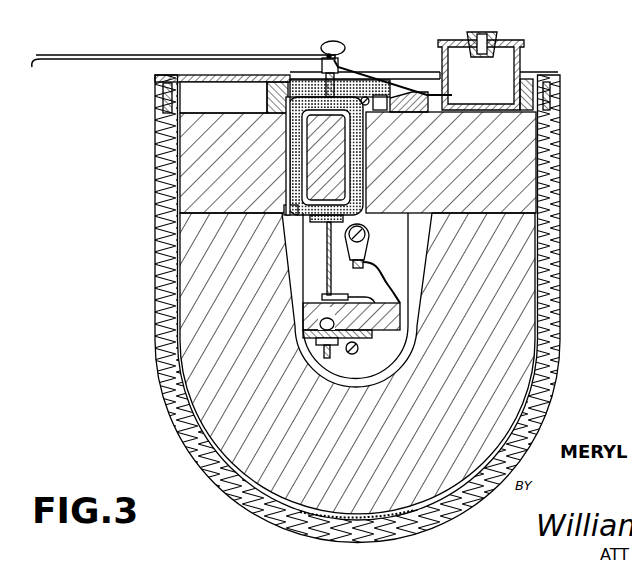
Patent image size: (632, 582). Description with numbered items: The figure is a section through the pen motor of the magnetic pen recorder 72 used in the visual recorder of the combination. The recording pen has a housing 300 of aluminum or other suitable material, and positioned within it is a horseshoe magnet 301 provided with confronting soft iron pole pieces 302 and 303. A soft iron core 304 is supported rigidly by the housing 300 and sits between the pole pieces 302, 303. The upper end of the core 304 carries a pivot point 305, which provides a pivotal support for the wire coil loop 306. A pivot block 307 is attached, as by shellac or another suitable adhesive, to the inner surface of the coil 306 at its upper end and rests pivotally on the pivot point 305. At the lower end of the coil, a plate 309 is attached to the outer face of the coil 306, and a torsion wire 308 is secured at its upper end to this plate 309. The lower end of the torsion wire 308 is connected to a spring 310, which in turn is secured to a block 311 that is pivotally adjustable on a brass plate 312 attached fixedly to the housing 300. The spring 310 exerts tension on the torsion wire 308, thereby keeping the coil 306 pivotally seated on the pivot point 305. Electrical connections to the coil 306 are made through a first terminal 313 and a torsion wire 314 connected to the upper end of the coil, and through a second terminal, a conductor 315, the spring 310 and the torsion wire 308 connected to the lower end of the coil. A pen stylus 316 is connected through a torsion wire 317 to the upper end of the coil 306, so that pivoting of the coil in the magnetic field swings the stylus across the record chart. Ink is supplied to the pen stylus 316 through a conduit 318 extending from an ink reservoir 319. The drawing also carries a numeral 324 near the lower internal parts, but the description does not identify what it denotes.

The magnetic pen recorder 72 is at (153, 275).
The housing 300 is at (548, 160).
The horseshoe magnet 301 is at (512, 245).
The pole piece 302 is at (217, 192).
The pole piece 303 is at (515, 192).
The soft iron core 304 is at (290, 208).
The pivot point 305 is at (330, 85).
The wire coil loop 306 is at (293, 165).
The pivot block 307 is at (287, 143).
The torsion wire 308 is at (328, 248).
The plate 309 is at (325, 221).
The spring 310 is at (342, 300).
The block 311 is at (372, 328).
The brass plate 312 is at (355, 347).
The first terminal 313 is at (357, 93).
The torsion wire 314 is at (323, 80).
The conductor 315 is at (378, 265).
The pen stylus 316 is at (125, 53).
The torsion wire 317 is at (315, 73).
The conduit 318 is at (390, 97).
The ink reservoir 319 is at (520, 52).
The lamp 324 is at (362, 250).